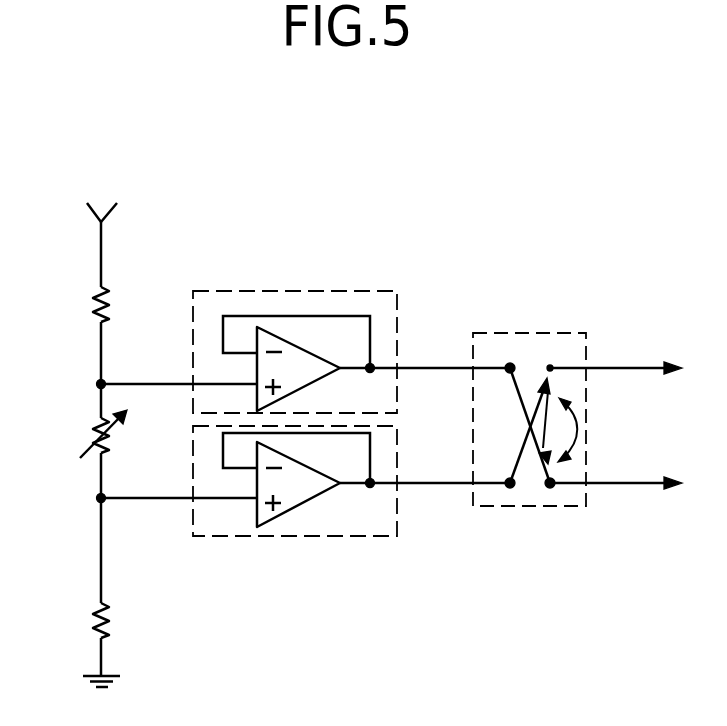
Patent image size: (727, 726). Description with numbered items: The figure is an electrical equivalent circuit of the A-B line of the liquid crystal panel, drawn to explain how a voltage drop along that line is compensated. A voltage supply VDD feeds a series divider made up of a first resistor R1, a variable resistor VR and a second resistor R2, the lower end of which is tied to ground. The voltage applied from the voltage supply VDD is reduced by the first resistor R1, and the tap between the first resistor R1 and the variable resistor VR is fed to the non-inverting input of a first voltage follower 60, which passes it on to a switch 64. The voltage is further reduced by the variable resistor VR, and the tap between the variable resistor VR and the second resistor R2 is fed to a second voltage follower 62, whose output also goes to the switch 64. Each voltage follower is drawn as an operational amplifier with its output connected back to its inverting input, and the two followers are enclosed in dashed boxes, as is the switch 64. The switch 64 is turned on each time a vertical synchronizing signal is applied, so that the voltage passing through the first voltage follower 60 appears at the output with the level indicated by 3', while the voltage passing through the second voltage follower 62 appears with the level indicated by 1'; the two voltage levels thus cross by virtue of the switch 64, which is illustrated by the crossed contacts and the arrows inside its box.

The first voltage follower 60 is at (365, 291).
The second voltage follower 62 is at (369, 536).
The switch 64 is at (565, 333).
The first resistor R1 is at (76, 335).
The second resistor R2 is at (82, 592).
The variable resistor VR is at (87, 441).
The voltage supply VDD is at (100, 232).
The voltage level 1' is at (616, 345).
The voltage level 3' is at (616, 460).